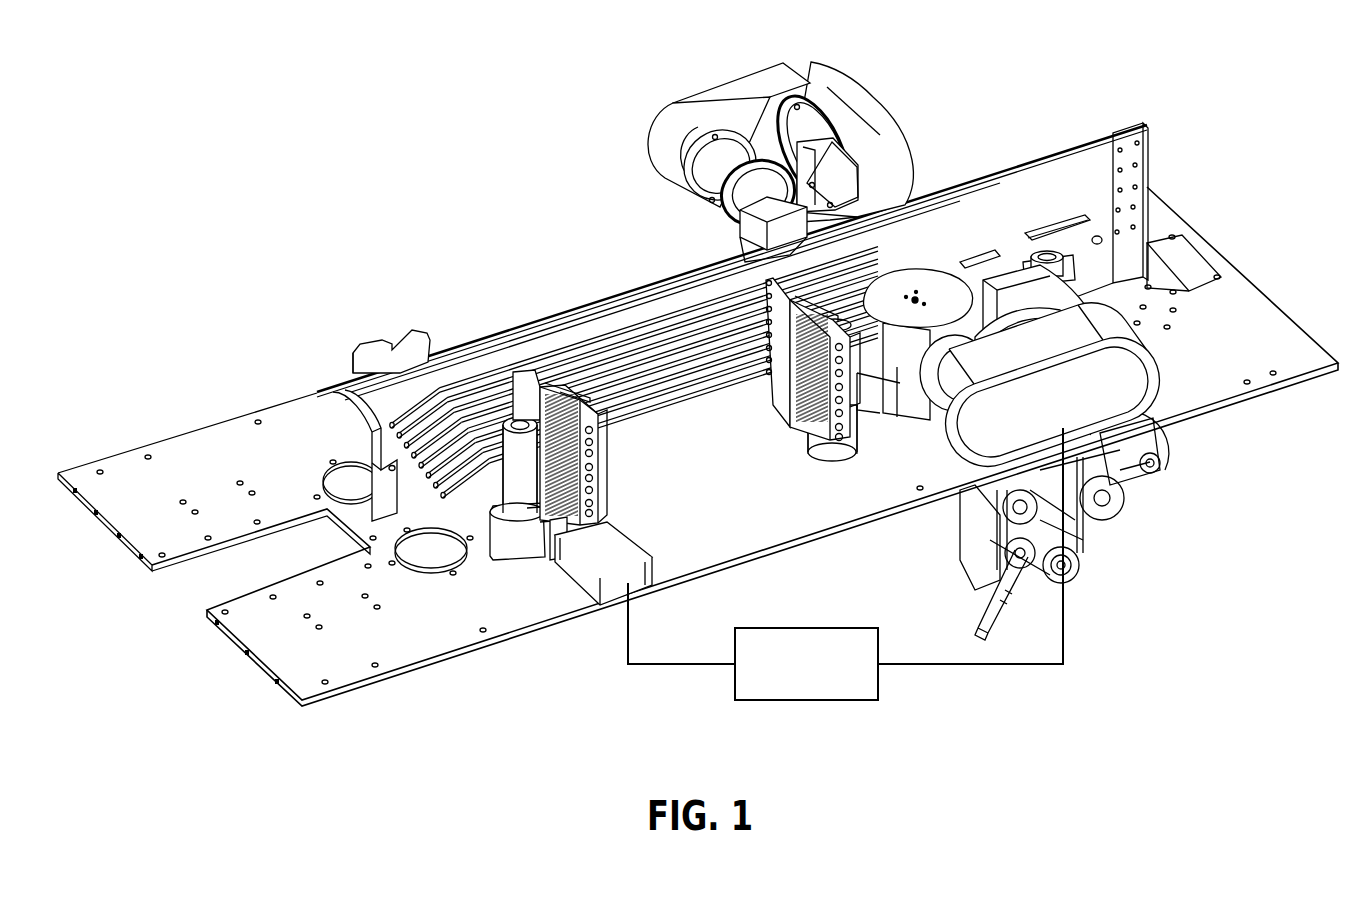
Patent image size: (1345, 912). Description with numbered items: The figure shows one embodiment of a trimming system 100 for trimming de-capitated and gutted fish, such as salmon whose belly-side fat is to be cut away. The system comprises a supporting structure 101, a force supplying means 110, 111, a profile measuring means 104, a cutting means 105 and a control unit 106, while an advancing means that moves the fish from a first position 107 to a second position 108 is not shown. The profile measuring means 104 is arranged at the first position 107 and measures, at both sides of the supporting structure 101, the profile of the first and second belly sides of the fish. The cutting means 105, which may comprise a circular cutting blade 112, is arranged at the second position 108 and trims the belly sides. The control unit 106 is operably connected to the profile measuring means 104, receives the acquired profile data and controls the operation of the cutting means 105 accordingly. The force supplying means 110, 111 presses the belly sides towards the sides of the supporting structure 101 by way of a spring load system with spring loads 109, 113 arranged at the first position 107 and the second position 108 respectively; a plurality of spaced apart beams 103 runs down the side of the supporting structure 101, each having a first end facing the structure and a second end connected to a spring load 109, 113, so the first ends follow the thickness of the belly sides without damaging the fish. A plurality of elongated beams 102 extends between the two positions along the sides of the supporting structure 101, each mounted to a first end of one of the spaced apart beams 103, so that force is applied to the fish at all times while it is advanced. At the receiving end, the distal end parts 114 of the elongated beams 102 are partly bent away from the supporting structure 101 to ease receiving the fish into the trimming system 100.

The trimming system 100 is at (212, 193).
The supporting structure 101 is at (418, 387).
The elongated beams 102 is at (597, 330).
The spaced apart beams 103 is at (540, 372).
The profile measuring means 104 is at (504, 334).
The cutting means 105 is at (928, 261).
The control unit 106 is at (870, 700).
The first position 107 is at (488, 320).
The second position 108 is at (887, 183).
The spring load 109 is at (560, 537).
The force supplying means 110 is at (634, 468).
The force supplying means 111 is at (781, 414).
The circular cutting blade 112 is at (953, 295).
The spring load 113 is at (812, 433).
The distal end parts 114 is at (450, 493).